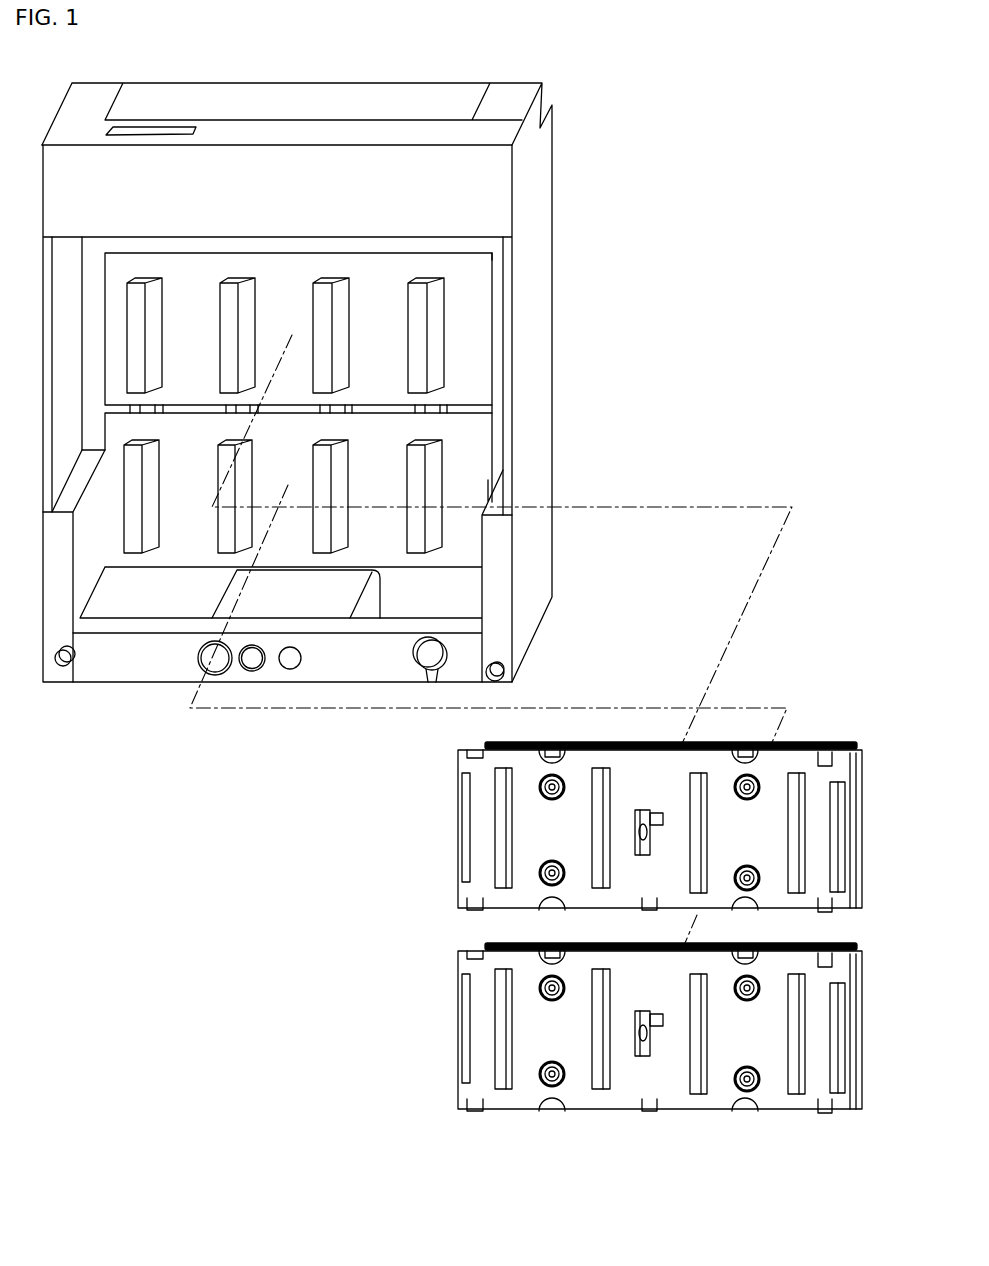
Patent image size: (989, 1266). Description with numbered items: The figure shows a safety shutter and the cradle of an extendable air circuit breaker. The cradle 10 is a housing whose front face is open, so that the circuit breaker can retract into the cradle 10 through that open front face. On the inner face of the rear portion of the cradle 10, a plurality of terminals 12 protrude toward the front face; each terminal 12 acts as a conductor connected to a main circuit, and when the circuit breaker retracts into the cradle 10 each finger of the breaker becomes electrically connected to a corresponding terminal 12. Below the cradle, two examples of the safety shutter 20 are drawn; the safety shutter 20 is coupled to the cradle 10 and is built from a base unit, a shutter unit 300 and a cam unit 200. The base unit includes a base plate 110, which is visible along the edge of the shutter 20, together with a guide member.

The cradle 10 is at (590, 161).
The terminal 12 is at (433, 335).
The safety shutter 20 is at (585, 883).
The base plate 110 is at (808, 748).
The cam unit 200 is at (650, 795).
The shutter unit 300 is at (445, 836).